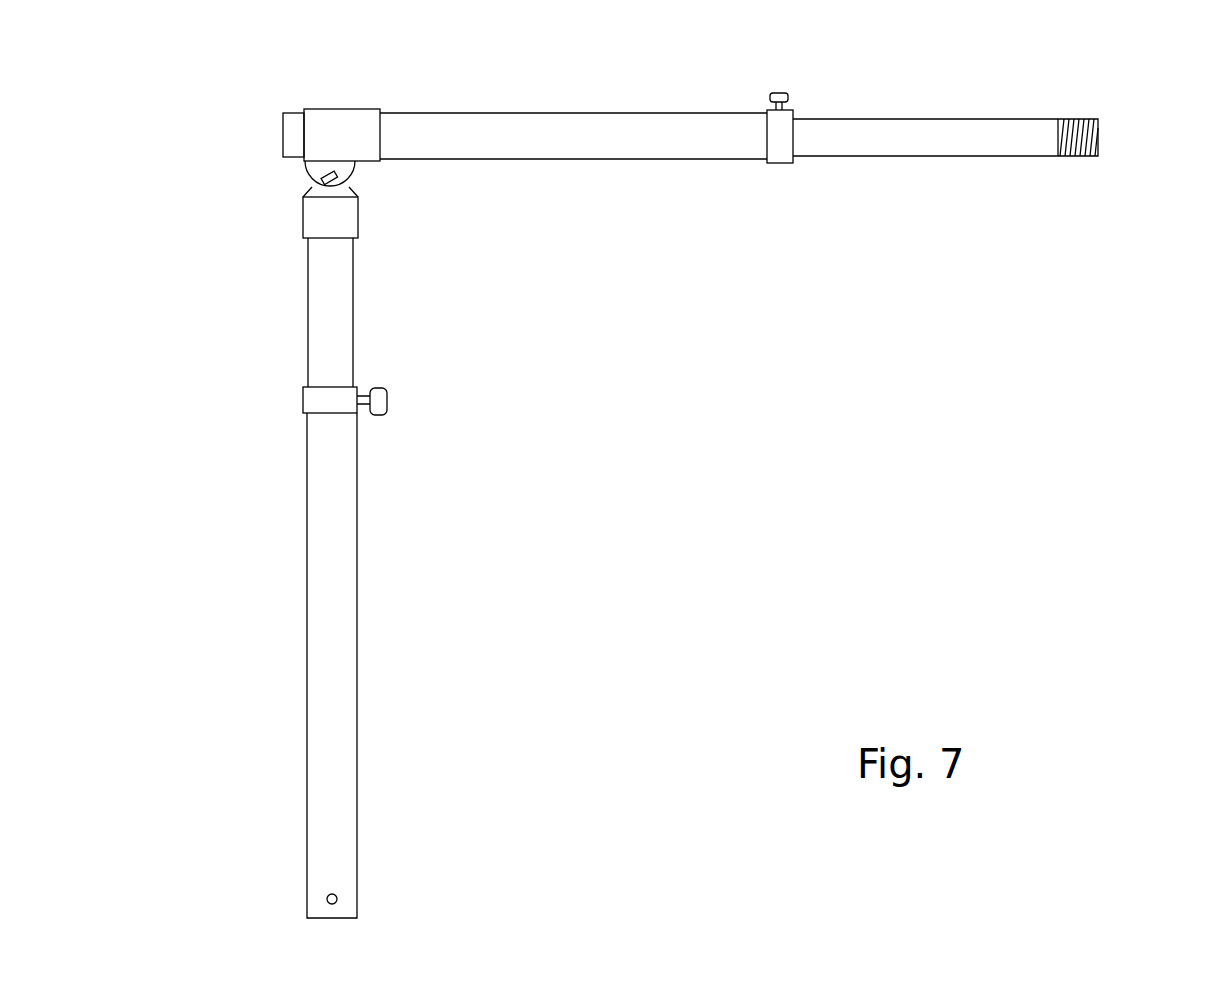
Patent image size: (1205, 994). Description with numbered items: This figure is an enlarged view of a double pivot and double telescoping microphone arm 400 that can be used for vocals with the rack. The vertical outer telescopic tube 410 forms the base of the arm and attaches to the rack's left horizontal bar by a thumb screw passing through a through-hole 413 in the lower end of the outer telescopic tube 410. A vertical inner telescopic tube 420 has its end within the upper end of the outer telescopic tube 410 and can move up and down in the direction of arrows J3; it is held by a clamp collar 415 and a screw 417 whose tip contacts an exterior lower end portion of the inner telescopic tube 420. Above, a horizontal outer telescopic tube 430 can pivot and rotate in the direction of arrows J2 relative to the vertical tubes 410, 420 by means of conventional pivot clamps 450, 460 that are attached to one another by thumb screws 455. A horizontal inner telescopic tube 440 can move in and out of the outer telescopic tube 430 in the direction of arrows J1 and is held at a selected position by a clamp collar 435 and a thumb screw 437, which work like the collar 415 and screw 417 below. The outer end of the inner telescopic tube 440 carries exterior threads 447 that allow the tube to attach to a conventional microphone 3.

The microphone arm 400 is at (706, 398).
The vertical outer telescopic tube 410 is at (328, 650).
The through-hole 413 is at (328, 895).
The clamp collar 415 is at (310, 400).
The screw 417 is at (380, 403).
The vertical inner telescopic tube 420 is at (327, 308).
The horizontal outer telescopic tube 430 is at (640, 130).
The clamp collar 435 is at (782, 153).
The thumb screw 437 is at (784, 95).
The horizontal inner telescopic tube 440 is at (898, 140).
The exterior threads 447 is at (1090, 120).
The pivot clamp 450 is at (315, 222).
The thumb screw 455 is at (355, 187).
The pivot clamp 460 is at (325, 133).
The microphone 3 is at (1115, 138).
The arrows J1 is at (980, 192).
The arrows J2 is at (518, 36).
The arrows J3 is at (401, 270).